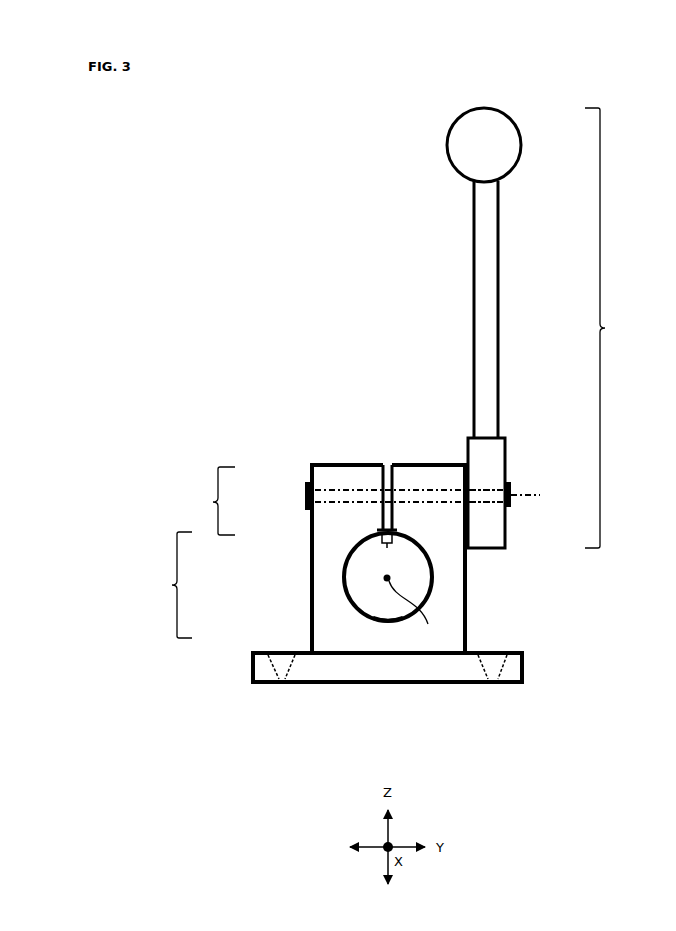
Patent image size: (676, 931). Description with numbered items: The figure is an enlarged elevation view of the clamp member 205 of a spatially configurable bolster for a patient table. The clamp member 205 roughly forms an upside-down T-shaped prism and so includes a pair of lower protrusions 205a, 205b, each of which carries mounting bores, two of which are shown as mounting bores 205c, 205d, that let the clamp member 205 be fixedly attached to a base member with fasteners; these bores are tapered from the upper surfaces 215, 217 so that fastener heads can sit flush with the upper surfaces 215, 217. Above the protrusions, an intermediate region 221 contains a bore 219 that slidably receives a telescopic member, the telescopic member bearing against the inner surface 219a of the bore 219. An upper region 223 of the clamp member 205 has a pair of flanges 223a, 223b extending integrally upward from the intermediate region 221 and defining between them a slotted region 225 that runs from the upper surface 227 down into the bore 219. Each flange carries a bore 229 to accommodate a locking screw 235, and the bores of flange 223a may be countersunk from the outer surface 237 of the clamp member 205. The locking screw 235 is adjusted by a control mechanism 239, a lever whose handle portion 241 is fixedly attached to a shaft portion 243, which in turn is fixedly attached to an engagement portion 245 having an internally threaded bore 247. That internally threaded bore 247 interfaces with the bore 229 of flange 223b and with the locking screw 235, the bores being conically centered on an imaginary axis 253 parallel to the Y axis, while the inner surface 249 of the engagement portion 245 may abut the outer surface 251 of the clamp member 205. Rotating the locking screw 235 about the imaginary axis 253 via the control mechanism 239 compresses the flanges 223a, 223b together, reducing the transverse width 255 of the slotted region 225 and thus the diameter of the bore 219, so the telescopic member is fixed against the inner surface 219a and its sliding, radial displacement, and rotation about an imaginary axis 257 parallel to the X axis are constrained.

The clamp member 205 is at (244, 417).
The lower protrusion 205a is at (262, 670).
The lower protrusion 205b is at (515, 665).
The mounting bore 205c is at (283, 683).
The mounting bore 205d is at (492, 683).
The upper surface 215 is at (265, 652).
The upper surface 217 is at (507, 652).
The bore 219 is at (366, 580).
The inner surface of bore 219a is at (389, 619).
The intermediate region 221 is at (172, 585).
The upper region 223 is at (213, 502).
The flange 223a is at (345, 464).
The flange 223b is at (425, 464).
The slotted region 225 is at (388, 454).
The upper surface 227 is at (312, 464).
The bore 229 is at (375, 496).
The locking screw 235 is at (305, 497).
The outer surface 237 is at (312, 598).
The control mechanism 239 is at (613, 328).
The handle portion 241 is at (512, 150).
The shaft portion 243 is at (490, 325).
The engagement portion 245 is at (505, 455).
The internally threaded bore 247 is at (483, 500).
The inner surface of engagement portion 249 is at (459, 541).
The outer surface 251 is at (467, 598).
The imaginary axis 253 is at (540, 495).
The transverse width 255 is at (388, 558).
The imaginary axis 257 is at (415, 612).